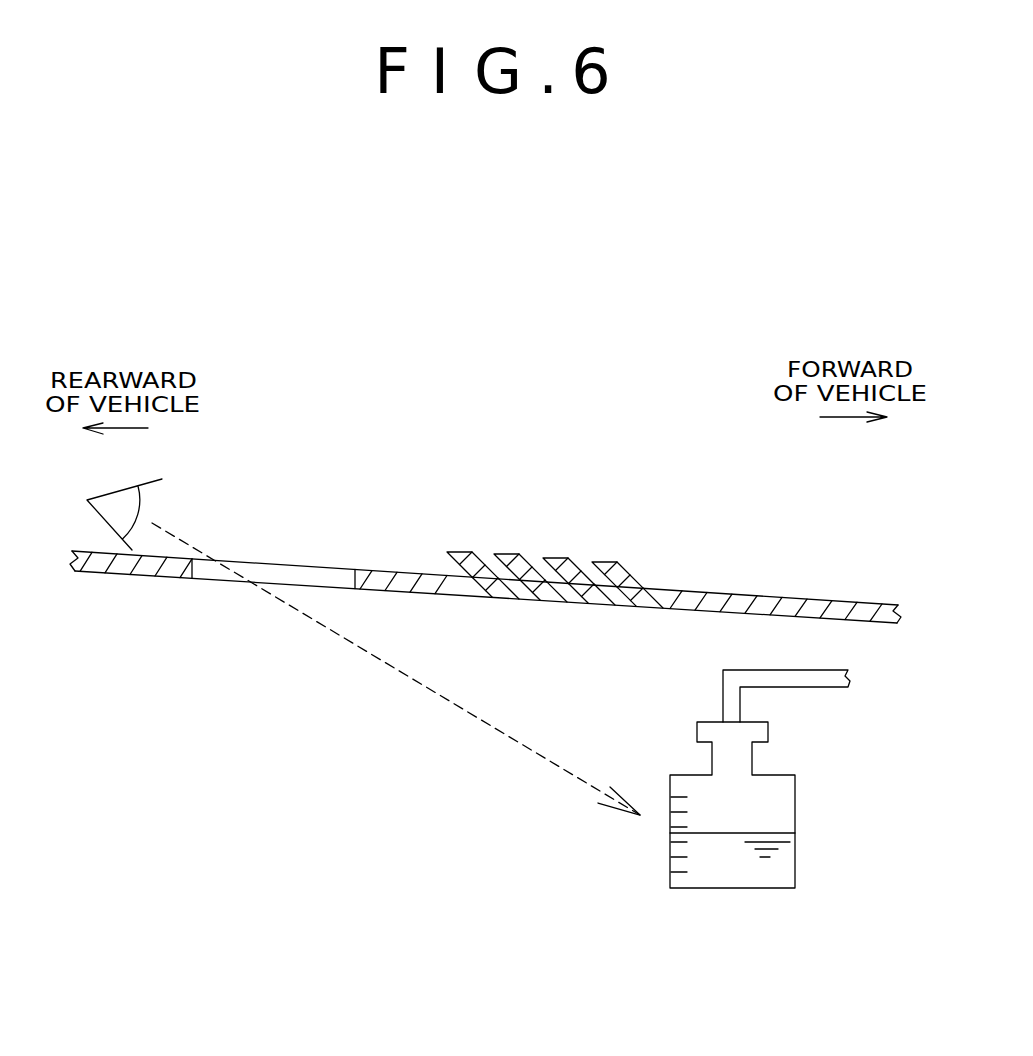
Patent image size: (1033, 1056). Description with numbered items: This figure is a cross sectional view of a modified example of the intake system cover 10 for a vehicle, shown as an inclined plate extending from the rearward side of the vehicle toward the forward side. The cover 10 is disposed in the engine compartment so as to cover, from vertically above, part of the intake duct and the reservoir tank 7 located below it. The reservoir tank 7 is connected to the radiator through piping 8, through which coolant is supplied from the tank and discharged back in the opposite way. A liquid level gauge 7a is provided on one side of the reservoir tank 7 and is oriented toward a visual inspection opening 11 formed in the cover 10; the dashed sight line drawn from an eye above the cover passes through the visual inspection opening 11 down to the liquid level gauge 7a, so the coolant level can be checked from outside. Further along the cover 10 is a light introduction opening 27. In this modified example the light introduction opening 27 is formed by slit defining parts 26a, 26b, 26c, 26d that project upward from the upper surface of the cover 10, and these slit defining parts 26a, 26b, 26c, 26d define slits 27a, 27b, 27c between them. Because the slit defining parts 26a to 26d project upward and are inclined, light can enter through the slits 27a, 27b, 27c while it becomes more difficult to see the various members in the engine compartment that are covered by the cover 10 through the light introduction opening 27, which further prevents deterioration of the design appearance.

The intake system cover 10 is at (822, 600).
The visual inspection opening 11 is at (355, 571).
The slit defining part 26a is at (458, 552).
The slit defining part 26b is at (506, 554).
The slit defining part 26c is at (556, 558).
The slit defining part 26d is at (608, 562).
The light introduction opening 27 is at (535, 663).
The slit 27a is at (523, 590).
The slit 27b is at (573, 594).
The slit 27c is at (620, 597).
The reservoir tank 7 is at (795, 803).
The liquid level gauge 7a is at (678, 832).
The piping 8 is at (820, 687).